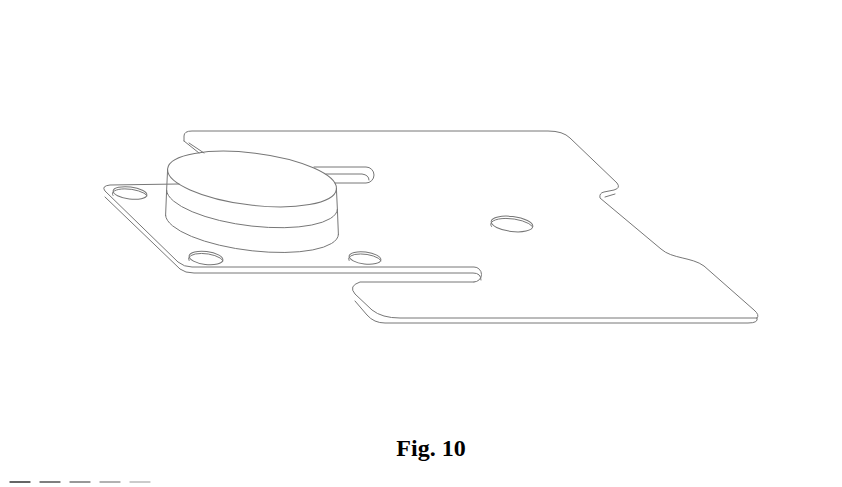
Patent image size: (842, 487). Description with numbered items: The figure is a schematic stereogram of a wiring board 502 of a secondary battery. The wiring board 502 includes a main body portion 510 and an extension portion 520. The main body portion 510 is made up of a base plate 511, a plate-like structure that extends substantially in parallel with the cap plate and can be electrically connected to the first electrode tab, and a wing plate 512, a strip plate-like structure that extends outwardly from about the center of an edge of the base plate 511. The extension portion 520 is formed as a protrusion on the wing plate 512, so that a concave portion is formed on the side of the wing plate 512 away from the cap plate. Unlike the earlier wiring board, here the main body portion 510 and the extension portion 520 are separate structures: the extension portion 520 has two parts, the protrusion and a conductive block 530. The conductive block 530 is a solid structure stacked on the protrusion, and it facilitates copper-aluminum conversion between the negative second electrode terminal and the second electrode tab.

The wiring board 502 is at (410, 212).
The main body portion 510 is at (565, 183).
The base plate 511 is at (593, 268).
The wing plate 512 is at (153, 218).
The extension portion 520 is at (278, 242).
The conductive block 530 is at (238, 172).